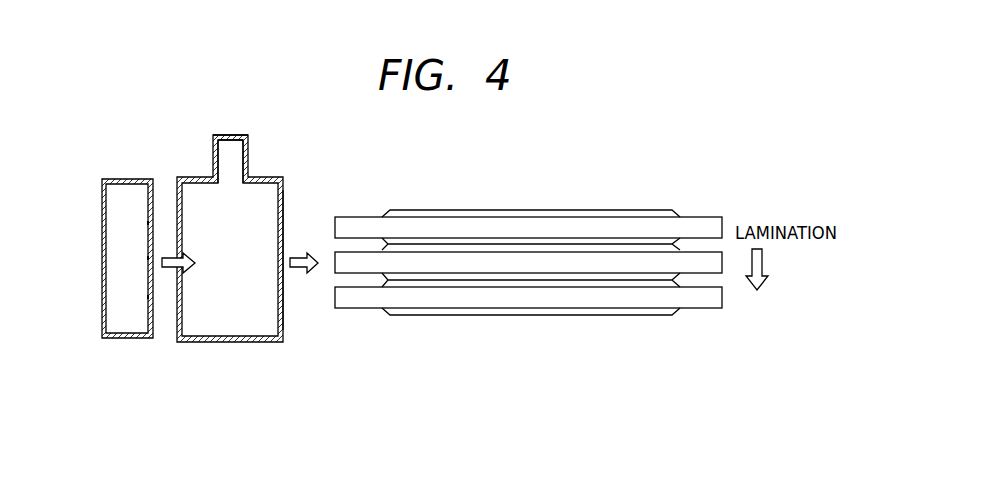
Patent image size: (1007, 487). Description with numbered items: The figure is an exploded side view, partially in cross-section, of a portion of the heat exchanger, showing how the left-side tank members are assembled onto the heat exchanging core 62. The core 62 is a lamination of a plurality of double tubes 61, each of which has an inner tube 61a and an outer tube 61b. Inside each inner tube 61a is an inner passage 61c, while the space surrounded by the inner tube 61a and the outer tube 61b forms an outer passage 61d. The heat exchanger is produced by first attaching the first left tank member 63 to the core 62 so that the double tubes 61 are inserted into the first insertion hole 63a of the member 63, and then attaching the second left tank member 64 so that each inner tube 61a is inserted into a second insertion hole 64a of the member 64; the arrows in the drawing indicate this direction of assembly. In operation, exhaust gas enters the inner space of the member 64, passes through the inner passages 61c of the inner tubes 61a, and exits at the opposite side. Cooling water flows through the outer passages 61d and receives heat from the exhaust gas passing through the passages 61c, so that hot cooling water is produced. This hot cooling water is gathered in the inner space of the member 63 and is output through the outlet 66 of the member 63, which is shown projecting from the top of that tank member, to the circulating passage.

The double tube 61 is at (358, 216).
The inner tube 61a is at (470, 214).
The outer tube 61b is at (520, 210).
The inner passage 61c is at (418, 225).
The outer passage 61d is at (568, 212).
The heat exchanging core 62 is at (528, 274).
The first left tank member 63 is at (245, 263).
The first insertion hole 63a is at (283, 299).
The second left tank member 64 is at (123, 340).
The second insertion hole 64a is at (148, 223).
The outlet 66 is at (213, 147).